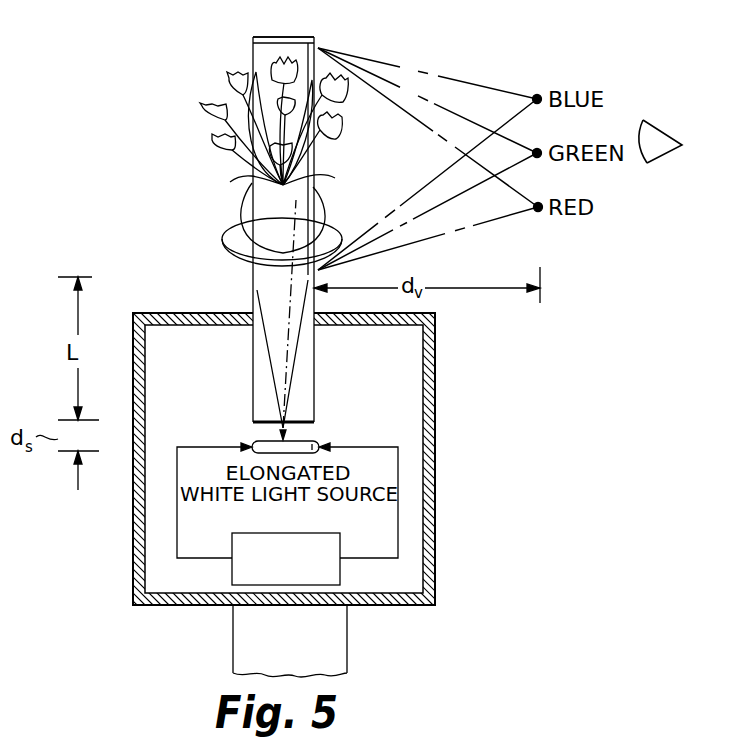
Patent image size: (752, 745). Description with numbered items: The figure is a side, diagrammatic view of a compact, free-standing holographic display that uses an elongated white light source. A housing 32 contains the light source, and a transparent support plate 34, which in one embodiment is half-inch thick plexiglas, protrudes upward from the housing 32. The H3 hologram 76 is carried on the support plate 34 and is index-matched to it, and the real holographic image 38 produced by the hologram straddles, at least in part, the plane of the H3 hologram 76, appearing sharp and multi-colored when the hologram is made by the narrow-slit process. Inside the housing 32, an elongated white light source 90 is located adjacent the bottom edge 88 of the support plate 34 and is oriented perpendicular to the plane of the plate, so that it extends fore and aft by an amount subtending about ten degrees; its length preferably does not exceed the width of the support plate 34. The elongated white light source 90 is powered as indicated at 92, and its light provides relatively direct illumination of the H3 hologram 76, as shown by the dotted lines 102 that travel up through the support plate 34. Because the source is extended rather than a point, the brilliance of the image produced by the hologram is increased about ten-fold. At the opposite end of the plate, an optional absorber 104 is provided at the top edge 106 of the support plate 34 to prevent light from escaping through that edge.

The housing 32 is at (436, 458).
The transparent support plate 34 is at (253, 57).
The real holographic image 38 is at (253, 199).
The H3 hologram 76 is at (316, 179).
The bottom edge 88 is at (252, 441).
The elongated white light source 90 is at (316, 441).
The power 92 is at (341, 574).
The dotted lines 102 is at (262, 306).
The absorber 104 is at (302, 38).
The top edge 106 is at (253, 47).